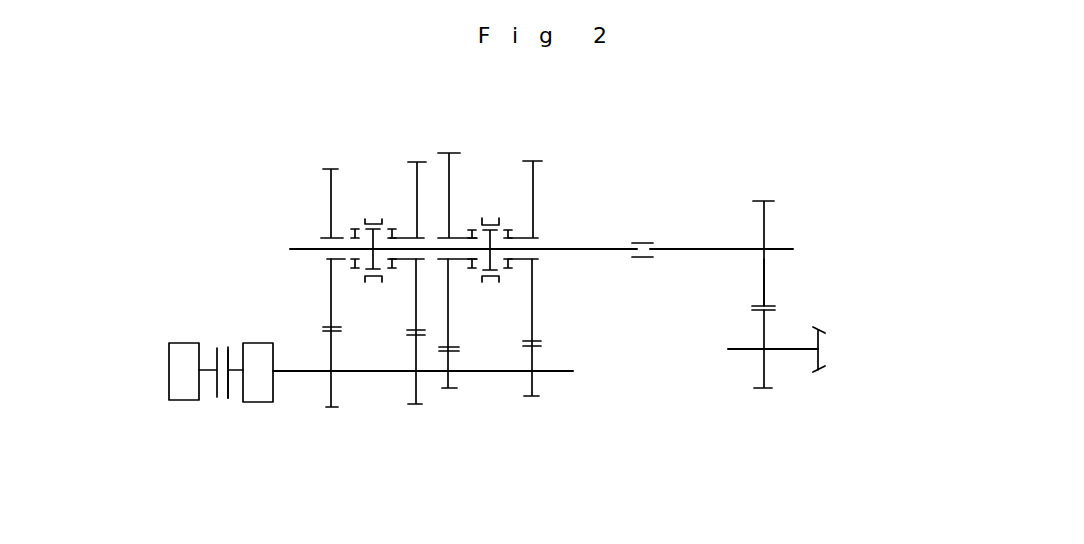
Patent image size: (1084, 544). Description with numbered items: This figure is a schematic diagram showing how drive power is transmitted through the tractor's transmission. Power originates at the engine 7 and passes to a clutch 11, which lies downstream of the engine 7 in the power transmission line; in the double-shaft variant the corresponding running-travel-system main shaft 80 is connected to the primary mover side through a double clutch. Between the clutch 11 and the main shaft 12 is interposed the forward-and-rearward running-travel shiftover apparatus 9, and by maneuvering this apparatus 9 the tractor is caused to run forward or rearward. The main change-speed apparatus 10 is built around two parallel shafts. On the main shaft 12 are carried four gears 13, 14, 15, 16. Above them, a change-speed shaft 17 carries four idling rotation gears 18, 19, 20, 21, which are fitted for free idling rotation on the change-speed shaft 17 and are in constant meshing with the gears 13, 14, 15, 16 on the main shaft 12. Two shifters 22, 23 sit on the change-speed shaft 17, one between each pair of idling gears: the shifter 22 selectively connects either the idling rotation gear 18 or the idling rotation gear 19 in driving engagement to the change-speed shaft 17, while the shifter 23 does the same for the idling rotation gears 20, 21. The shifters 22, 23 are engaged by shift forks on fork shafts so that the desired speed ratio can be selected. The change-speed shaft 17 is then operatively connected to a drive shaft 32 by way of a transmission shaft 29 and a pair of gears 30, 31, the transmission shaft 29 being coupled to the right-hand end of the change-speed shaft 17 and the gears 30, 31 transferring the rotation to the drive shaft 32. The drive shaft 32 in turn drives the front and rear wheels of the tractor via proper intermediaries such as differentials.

The engine 7 is at (184, 371).
The forward-and-rearward running-travel shiftover apparatus 9 is at (258, 372).
The main change-speed apparatus 10 is at (491, 158).
The clutch 11 is at (228, 390).
The main shaft 12 is at (300, 372).
The gear 13 is at (332, 392).
The gear 14 is at (413, 385).
The gear 15 is at (448, 378).
The gear 16 is at (530, 397).
The change-speed shaft 17 is at (303, 248).
The idling rotation gear 18 is at (331, 198).
The idling rotation gear 19 is at (415, 200).
The idling rotation gear 20 is at (449, 195).
The idling rotation gear 21 is at (533, 198).
The shifter 22 is at (372, 282).
The shifter 23 is at (488, 222).
The transmission shaft 29 is at (787, 250).
The gear 30 is at (764, 278).
The gear 31 is at (768, 373).
The drive shaft 32 is at (793, 348).
The running-travel-system main shaft 80 is at (238, 368).